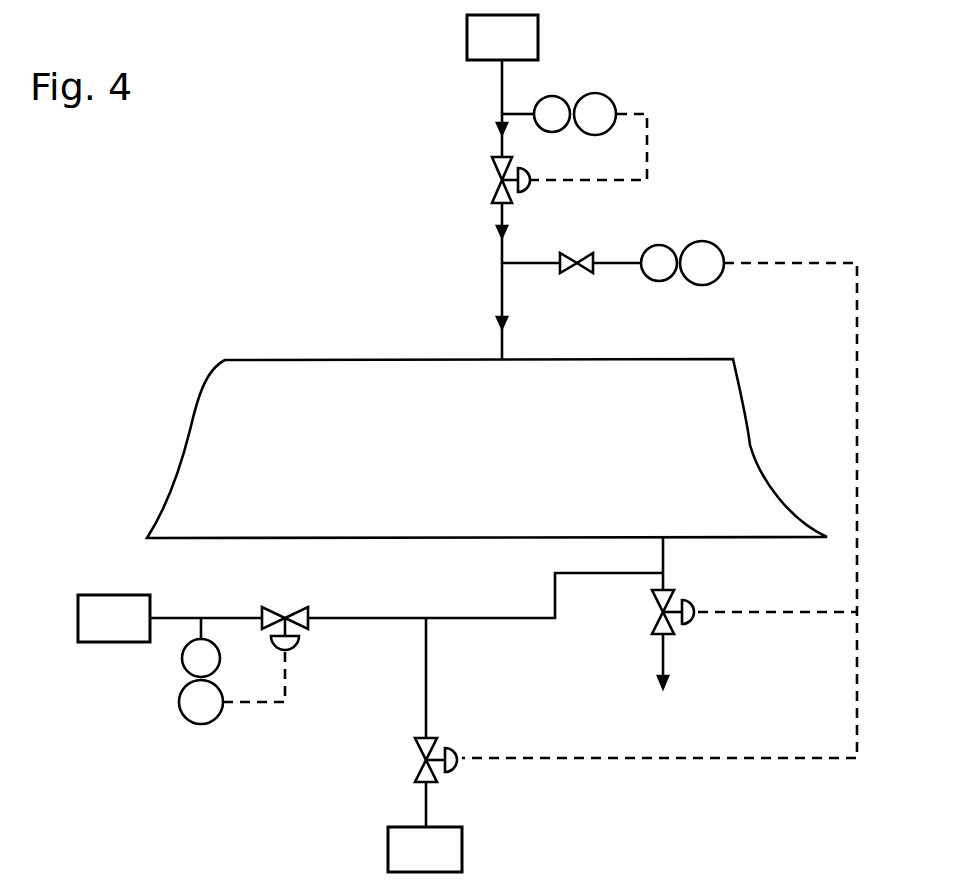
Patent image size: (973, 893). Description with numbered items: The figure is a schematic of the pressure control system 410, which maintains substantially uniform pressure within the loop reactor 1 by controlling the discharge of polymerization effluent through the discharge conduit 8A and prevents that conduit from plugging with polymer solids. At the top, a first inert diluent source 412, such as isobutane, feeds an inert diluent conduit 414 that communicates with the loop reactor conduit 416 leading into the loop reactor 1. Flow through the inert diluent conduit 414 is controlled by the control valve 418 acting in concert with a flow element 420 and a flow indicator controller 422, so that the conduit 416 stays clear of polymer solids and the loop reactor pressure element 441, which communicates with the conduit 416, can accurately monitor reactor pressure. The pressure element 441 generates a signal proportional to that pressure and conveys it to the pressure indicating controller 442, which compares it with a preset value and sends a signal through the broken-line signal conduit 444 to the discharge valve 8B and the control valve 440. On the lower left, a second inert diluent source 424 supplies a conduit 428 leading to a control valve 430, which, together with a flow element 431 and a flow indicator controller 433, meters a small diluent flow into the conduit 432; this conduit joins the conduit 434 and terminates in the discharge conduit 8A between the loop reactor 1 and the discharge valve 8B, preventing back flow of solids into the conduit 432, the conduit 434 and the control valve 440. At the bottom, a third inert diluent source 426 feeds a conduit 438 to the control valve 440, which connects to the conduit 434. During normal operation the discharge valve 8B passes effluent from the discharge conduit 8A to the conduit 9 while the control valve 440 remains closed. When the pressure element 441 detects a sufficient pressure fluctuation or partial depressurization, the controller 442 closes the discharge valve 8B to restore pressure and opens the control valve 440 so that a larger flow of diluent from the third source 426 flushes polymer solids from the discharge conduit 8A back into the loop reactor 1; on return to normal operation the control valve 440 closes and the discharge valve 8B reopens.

The pressure control system 410 is at (795, 140).
The loop reactor 1 is at (368, 348).
The first inert diluent source 412 is at (502, 37).
The inert diluent conduit 414 is at (502, 78).
The loop reactor conduit 416 is at (502, 217).
The control valve 418 is at (502, 157).
The flow element 420 is at (556, 96).
The flow indicator controller 422 is at (605, 94).
The loop reactor pressure element 441 is at (661, 245).
The pressure indicating controller 442 is at (717, 242).
The signal conduit 444 is at (857, 315).
The second inert diluent source 424 is at (114, 618).
The conduit 428 is at (182, 617).
The control valve 430 is at (300, 607).
The flow element 431 is at (182, 658).
The flow indicator controller 433 is at (180, 713).
The conduit 432 is at (450, 617).
The conduit 434 is at (426, 673).
The conduit 438 is at (424, 797).
The control valve 440 is at (430, 785).
The third inert diluent source 426 is at (425, 849).
The discharge conduit 8A is at (665, 558).
The discharge valve 8B is at (673, 637).
The conduit 9 is at (667, 663).